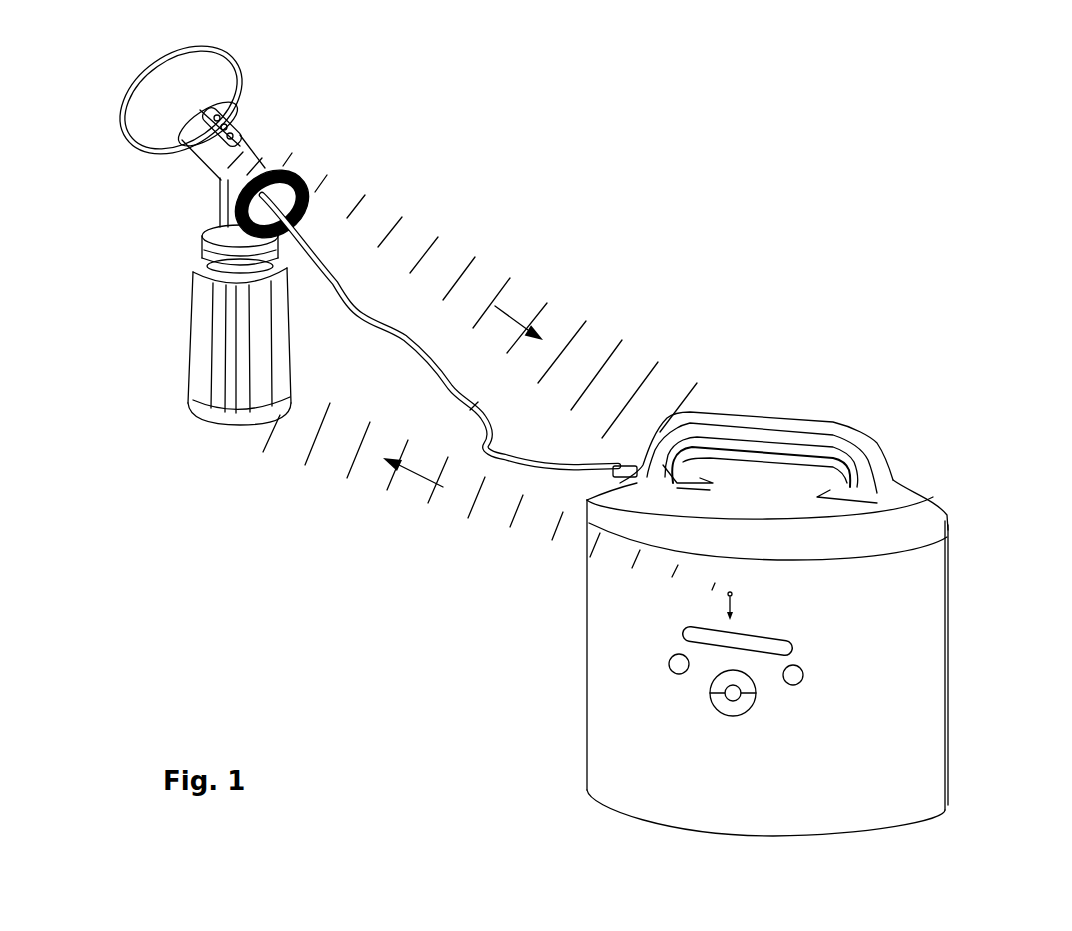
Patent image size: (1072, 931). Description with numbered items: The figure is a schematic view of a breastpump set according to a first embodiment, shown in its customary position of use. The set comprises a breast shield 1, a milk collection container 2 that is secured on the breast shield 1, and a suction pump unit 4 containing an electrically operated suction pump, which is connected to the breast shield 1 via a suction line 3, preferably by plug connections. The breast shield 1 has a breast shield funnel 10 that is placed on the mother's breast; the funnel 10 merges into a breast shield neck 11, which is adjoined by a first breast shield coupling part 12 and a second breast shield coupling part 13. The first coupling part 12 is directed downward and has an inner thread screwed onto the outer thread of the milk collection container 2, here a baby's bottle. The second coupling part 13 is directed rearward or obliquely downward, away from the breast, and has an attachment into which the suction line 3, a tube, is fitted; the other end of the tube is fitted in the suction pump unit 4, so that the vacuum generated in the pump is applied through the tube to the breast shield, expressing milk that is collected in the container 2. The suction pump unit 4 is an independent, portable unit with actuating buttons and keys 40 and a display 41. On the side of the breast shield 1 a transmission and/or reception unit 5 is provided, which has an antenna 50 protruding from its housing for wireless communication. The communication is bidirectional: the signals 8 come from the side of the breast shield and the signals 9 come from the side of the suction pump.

The breast shield 1 is at (283, 70).
The milk collection container 2 is at (203, 380).
The suction line 3 is at (376, 323).
The suction pump unit 4 is at (917, 645).
The transmission and/or reception unit 5 is at (243, 118).
The signals from the side of the breast shield 8 is at (520, 323).
The signals from the side of the suction pump 9 is at (420, 477).
The breast shield funnel 10 is at (155, 130).
The breast shield neck 11 is at (210, 153).
The first breast shield coupling part 12 is at (217, 253).
The second breast shield coupling part 13 is at (290, 173).
The actuating buttons and keys 40 is at (670, 662).
The display 41 is at (687, 634).
The antenna 50 is at (253, 137).